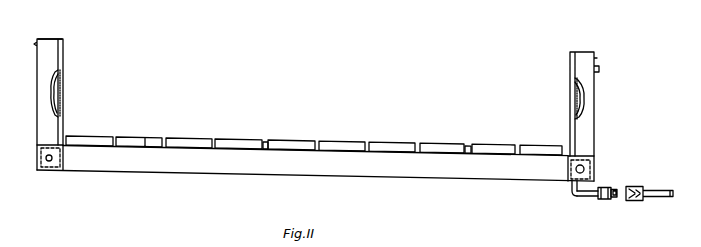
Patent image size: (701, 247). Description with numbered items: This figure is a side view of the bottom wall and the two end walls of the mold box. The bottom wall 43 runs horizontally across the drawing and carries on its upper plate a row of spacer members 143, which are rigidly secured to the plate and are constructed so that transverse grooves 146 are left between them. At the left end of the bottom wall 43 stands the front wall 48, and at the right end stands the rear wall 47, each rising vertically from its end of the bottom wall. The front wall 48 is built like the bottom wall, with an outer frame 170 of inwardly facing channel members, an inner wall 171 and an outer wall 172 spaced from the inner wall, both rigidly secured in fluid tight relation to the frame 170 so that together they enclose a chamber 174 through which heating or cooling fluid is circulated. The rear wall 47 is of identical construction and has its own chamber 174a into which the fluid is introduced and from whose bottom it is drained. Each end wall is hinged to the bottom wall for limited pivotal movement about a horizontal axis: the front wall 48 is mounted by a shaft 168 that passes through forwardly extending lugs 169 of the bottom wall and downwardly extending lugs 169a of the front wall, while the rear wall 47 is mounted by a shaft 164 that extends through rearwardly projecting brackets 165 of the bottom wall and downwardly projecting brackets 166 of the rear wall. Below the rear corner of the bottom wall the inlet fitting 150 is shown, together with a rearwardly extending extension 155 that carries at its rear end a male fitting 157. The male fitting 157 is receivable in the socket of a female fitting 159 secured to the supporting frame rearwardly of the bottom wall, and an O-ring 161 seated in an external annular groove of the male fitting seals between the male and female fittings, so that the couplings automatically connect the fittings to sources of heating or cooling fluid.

The bottom wall 43 is at (236, 172).
The rear wall 47 is at (603, 107).
The front wall 48 is at (38, 90).
The spacer members 143 is at (343, 142).
The transverse grooves 146 is at (269, 141).
The inlet fitting 150 is at (573, 192).
The extension 155 is at (580, 197).
The male fitting 157 is at (605, 199).
The female fitting 159 is at (636, 202).
The O-ring 161 is at (613, 199).
The shaft 164 is at (594, 159).
The rearwardly projecting brackets 165 is at (587, 171).
The downwardly projecting brackets 166 is at (594, 177).
The shaft 168 is at (43, 150).
The forwardly extending lugs 169 is at (38, 162).
The downwardly extending lugs 169a is at (53, 144).
The outer frame 170 is at (50, 45).
The inner wall 171 is at (62, 76).
The outer wall 172 is at (63, 70).
The chamber 174 is at (62, 92).
The chamber 174a is at (572, 97).